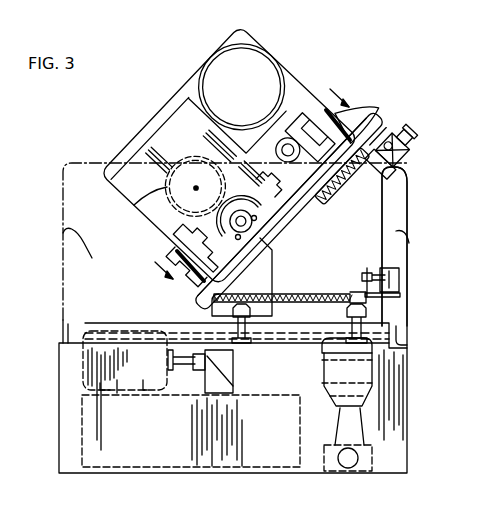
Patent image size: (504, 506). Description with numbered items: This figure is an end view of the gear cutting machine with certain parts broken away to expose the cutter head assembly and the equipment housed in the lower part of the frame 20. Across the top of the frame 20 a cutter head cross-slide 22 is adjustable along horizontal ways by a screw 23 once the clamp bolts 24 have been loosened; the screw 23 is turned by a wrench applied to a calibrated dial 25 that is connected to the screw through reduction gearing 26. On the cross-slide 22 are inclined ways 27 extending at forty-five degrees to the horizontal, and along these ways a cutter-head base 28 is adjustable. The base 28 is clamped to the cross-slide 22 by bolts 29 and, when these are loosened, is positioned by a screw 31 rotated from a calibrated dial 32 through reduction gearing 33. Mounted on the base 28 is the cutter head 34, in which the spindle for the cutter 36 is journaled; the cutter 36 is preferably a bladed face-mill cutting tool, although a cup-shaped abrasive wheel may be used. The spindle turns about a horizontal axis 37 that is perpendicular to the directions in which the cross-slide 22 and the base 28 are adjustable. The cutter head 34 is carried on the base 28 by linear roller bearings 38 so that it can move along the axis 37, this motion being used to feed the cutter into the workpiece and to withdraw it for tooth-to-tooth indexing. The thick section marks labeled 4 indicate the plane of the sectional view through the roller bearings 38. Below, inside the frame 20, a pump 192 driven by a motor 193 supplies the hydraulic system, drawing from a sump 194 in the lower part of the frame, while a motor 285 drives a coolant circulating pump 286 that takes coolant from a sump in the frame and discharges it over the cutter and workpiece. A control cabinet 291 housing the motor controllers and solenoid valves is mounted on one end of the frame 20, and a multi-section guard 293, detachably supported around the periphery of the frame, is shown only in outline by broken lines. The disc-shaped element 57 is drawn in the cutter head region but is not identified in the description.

The section line 4- 4 is at (251, 187).
The frame 20 is at (400, 396).
The cutter head cross-slide 22 is at (347, 269).
The screw 23 is at (290, 295).
The clamp bolts 24 is at (345, 305).
The calibrated dial 25 is at (384, 276).
The reduction gearing 26 is at (366, 294).
The inclined ways 27 is at (268, 238).
The cutter-head base 28 is at (287, 201).
The bolts 29 is at (347, 180).
The screw 31 is at (386, 176).
The calibrated dial 32 is at (412, 148).
The reduction gearing 33 is at (387, 138).
The cutter head 34 is at (203, 137).
The cutter 36 is at (134, 207).
The axis of rotation of the cutter spindle 37 is at (195, 190).
The linear roller bearings 38 is at (379, 100).
The disc 57 is at (250, 89).
The pump 192 is at (236, 363).
The motor 193 is at (83, 365).
The sump 194 is at (82, 422).
The motor 285 is at (358, 378).
The coolant circulating pump 286 is at (355, 455).
The control cabinet 291 is at (409, 201).
The multi-section guard 293 is at (450, 234).